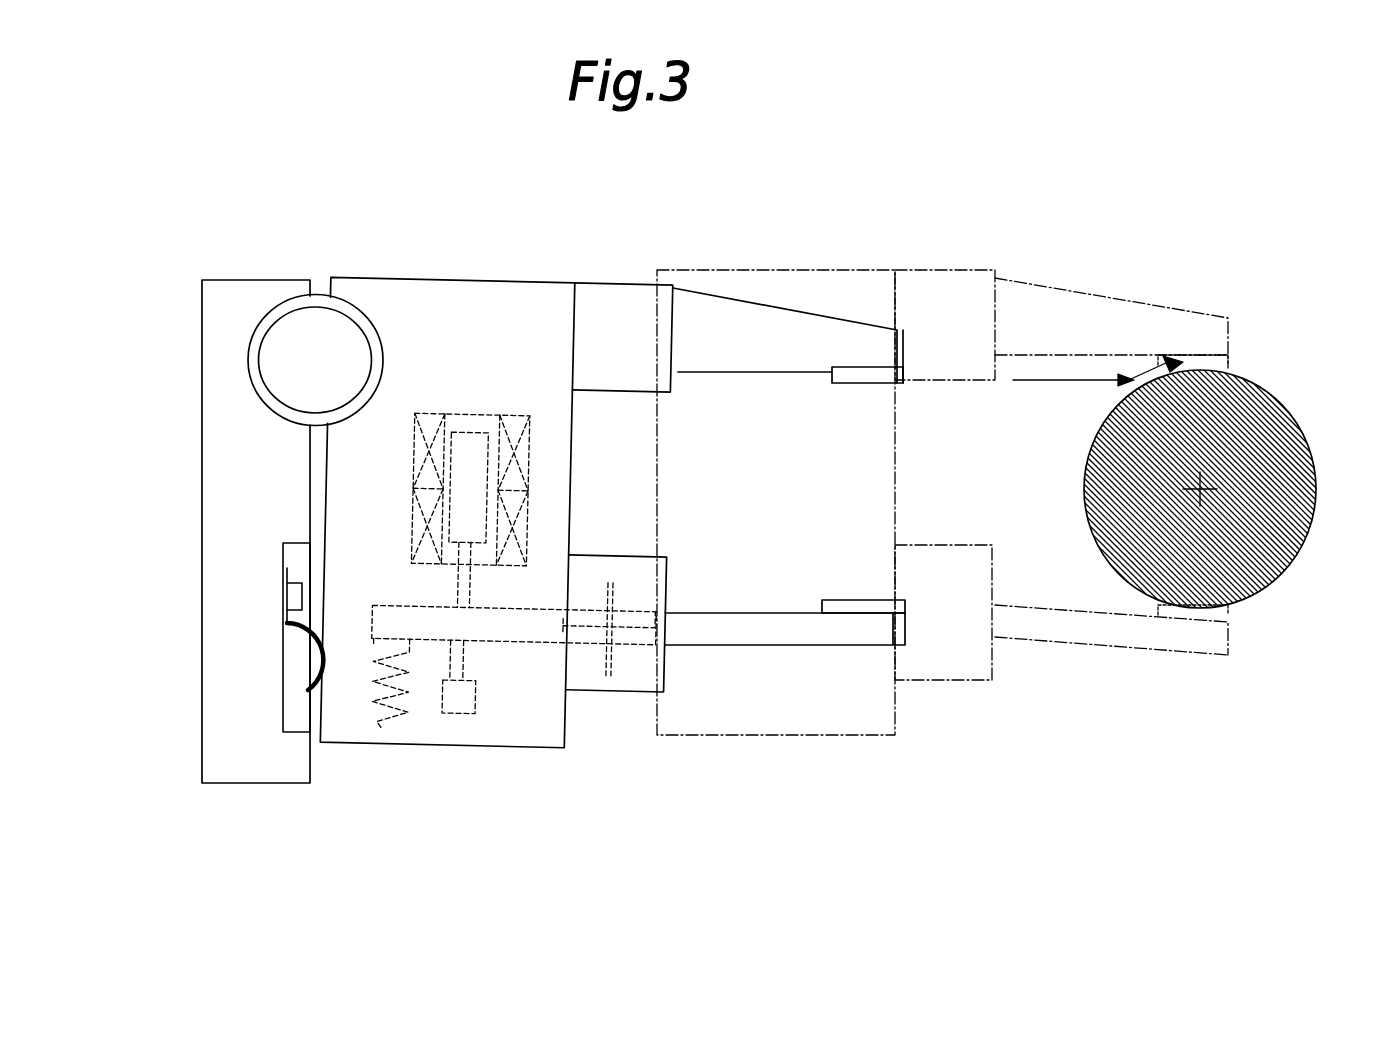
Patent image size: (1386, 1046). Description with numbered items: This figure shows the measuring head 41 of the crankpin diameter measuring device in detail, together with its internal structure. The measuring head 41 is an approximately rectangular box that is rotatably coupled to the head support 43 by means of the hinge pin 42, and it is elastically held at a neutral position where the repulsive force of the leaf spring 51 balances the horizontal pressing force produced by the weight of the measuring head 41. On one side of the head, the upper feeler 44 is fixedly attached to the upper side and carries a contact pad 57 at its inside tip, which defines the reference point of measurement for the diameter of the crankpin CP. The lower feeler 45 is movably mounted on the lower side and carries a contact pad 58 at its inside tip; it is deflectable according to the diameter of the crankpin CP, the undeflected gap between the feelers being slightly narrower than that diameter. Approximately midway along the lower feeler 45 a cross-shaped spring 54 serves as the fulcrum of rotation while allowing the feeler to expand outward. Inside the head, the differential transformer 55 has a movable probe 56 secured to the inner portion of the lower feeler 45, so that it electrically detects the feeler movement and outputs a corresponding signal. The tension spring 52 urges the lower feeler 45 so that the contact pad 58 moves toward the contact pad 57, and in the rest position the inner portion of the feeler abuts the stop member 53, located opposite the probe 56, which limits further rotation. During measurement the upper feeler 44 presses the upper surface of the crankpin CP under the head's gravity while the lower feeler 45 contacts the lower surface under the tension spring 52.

The measuring head 41 is at (417, 312).
The hinge pin 42 is at (293, 333).
The head support 43 is at (238, 492).
The upper feeler 44 is at (785, 330).
The lower feeler 45 is at (748, 630).
The leaf spring 51 is at (313, 635).
The tension spring 52 is at (410, 722).
The stop member 53 is at (482, 665).
The cross-shaped spring 54 is at (612, 660).
The differential transformer 55 is at (484, 410).
The movable probe 56 is at (455, 588).
The contact pad 57 is at (871, 378).
The contact pad 58 is at (855, 608).
The crankpin CP is at (1272, 428).